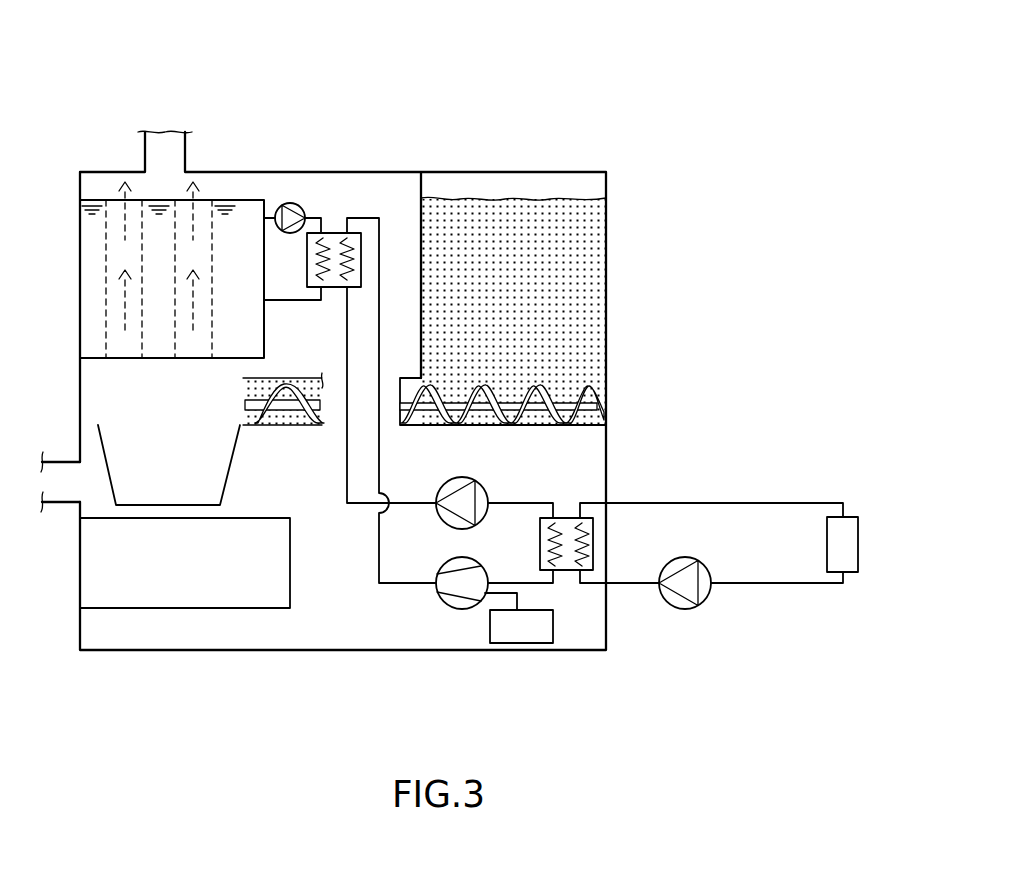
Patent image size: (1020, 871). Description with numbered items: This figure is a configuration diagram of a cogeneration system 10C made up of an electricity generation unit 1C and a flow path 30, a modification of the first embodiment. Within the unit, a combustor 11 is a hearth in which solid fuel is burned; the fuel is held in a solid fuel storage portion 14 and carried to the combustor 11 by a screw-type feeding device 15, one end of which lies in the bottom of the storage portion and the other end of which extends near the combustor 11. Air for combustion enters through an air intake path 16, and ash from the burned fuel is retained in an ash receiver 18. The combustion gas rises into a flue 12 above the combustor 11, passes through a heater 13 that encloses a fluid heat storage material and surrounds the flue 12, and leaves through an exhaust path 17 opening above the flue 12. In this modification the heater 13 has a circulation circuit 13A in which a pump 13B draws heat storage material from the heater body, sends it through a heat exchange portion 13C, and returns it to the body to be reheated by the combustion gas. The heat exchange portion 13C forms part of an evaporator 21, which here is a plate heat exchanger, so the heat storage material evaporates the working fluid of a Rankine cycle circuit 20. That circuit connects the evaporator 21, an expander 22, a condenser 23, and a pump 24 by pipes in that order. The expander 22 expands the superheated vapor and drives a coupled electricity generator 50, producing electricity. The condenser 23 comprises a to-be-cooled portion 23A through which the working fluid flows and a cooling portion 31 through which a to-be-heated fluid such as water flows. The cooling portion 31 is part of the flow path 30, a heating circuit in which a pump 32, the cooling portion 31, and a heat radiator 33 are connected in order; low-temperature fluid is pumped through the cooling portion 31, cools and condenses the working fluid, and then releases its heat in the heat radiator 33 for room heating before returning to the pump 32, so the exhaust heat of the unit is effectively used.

The cogeneration system 10C is at (653, 99).
The electricity generation unit 1C is at (557, 172).
The combustor 11 is at (228, 478).
The flue 12 is at (107, 332).
The heater 13 is at (163, 358).
The circulation circuit 13A is at (290, 300).
The pump 13B is at (290, 203).
The heat exchange portion 13C is at (333, 263).
The solid fuel storage portion 14 is at (588, 273).
The feeding device 15 is at (303, 403).
The air intake path 16 is at (60, 503).
The exhaust path 17 is at (185, 147).
The ash receiver 18 is at (187, 587).
The Rankine cycle circuit 20 is at (376, 550).
The evaporator 21 is at (363, 253).
The expander 22 is at (453, 610).
The condenser 23 is at (540, 545).
The to-be-cooled portion 23A is at (563, 540).
The pump 24 is at (460, 477).
The flow path 30 is at (671, 502).
The cooling portion 31 is at (594, 543).
The pump 32 is at (683, 612).
The heat radiator 33 is at (860, 543).
The electricity generator 50 is at (522, 645).